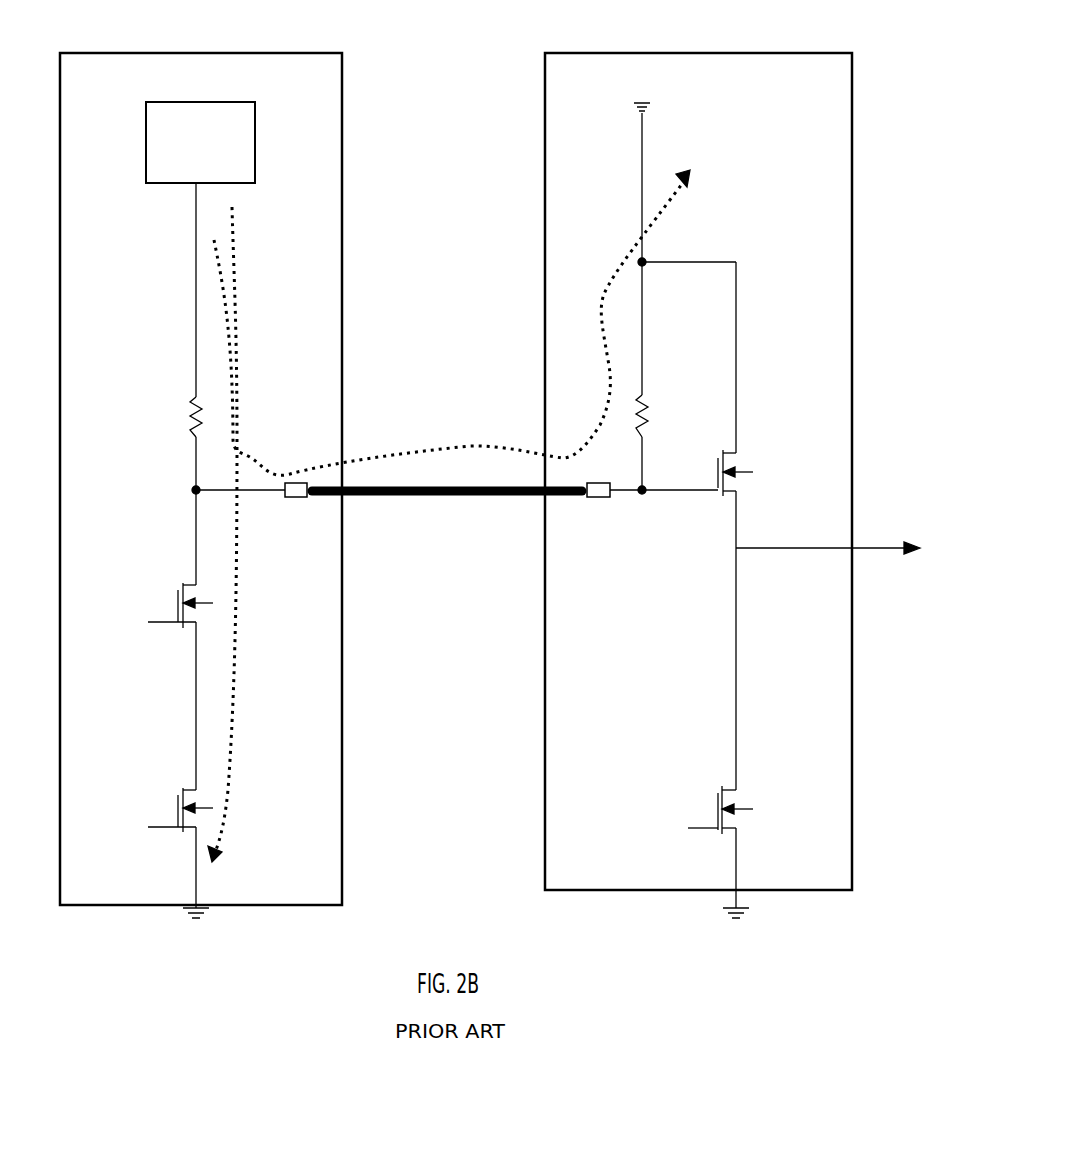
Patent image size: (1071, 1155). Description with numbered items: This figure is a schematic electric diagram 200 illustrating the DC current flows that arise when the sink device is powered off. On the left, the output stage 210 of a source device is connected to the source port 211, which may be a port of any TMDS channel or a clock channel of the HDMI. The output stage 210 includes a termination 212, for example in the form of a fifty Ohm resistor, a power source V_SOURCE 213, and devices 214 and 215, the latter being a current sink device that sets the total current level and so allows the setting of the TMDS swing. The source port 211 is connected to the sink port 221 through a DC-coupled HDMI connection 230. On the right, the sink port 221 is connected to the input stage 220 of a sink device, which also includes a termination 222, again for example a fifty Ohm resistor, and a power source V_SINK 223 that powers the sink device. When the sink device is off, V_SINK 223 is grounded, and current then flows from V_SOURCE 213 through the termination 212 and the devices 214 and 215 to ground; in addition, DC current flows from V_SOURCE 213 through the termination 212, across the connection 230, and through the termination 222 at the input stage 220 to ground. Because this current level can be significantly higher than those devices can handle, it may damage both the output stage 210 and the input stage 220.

The interface circuit 200 is at (472, 92).
The output stage 210 is at (343, 152).
The source port 211 is at (304, 498).
The termination 212 is at (185, 418).
The power source V_SOURCE 213 is at (177, 184).
The device 214 is at (180, 640).
The device 215 is at (152, 801).
The input stage 220 is at (545, 218).
The sink port 221 is at (600, 498).
The termination 222 is at (656, 420).
The power source V_SINK 223 is at (640, 119).
The DC-coupled HDMI connection 230 is at (465, 498).